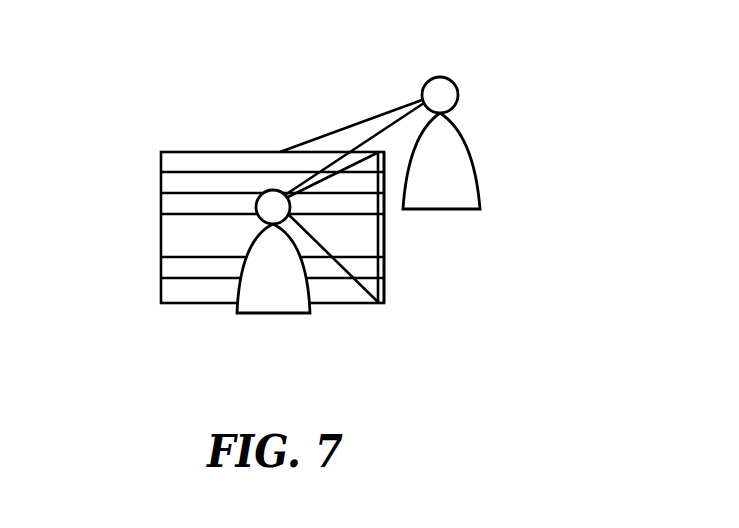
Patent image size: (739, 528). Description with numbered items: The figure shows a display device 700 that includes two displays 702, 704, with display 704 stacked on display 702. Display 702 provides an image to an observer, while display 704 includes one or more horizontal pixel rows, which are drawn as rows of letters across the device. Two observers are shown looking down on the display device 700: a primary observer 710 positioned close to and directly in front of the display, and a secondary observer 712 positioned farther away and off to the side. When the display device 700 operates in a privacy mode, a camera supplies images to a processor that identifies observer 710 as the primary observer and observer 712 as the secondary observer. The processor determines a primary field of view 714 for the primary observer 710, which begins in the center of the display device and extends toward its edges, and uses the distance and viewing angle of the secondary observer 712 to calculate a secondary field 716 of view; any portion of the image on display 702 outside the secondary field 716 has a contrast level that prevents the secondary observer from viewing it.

The display device 700 is at (214, 128).
The display 702 is at (197, 243).
The display 704 is at (386, 248).
The observer 710 is at (307, 313).
The observer 712 is at (480, 176).
The primary field of view 714 is at (380, 279).
The secondary field of view 716 is at (360, 121).